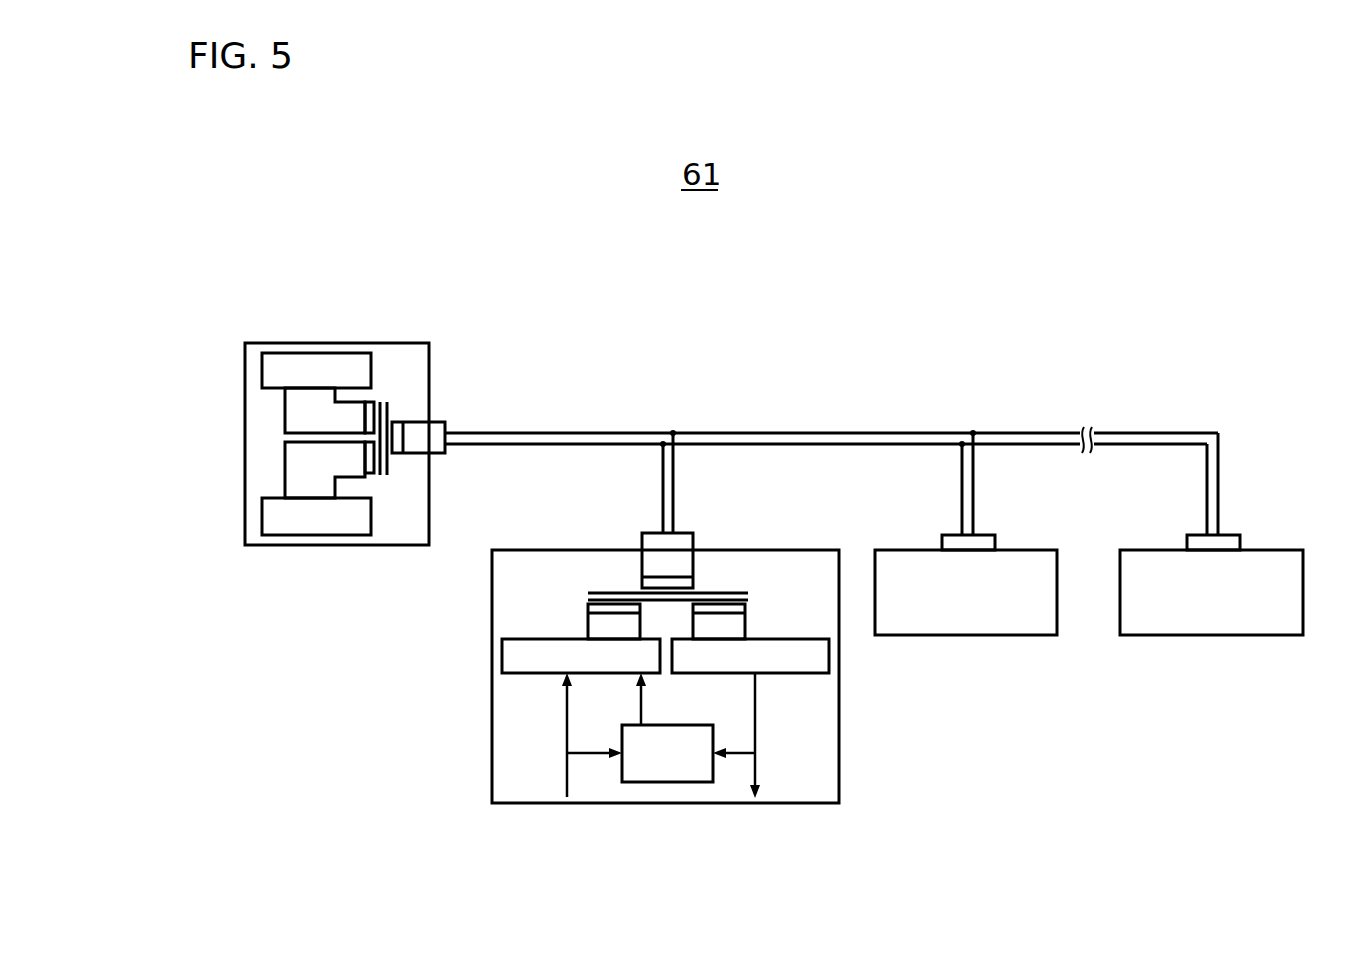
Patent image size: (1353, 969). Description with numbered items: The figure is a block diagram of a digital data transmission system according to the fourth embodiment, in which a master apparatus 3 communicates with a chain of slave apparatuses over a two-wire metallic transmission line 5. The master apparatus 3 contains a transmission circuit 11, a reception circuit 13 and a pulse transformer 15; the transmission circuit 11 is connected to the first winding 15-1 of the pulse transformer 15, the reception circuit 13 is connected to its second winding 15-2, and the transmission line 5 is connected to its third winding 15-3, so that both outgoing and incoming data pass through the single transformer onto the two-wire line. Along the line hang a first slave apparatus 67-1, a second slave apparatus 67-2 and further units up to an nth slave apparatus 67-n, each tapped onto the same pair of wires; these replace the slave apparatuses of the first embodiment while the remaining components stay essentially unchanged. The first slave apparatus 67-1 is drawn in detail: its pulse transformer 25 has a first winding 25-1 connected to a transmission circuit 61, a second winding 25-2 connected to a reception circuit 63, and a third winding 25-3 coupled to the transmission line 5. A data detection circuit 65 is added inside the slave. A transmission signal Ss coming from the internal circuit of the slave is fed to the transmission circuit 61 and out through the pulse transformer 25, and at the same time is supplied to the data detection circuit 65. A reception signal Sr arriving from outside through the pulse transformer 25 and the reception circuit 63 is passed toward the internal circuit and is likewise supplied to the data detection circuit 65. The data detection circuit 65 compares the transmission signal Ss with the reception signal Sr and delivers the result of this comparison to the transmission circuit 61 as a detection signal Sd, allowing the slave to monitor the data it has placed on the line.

The master apparatus 3 is at (305, 336).
The 2-wire metallic transmission line 5 is at (812, 458).
The transmission circuit 11 is at (262, 366).
The reception circuit 13 is at (262, 516).
The pulse transformer 15 is at (400, 468).
The first winding 15-1 is at (376, 400).
The second winding 15-2 is at (372, 477).
The third winding 15-3 is at (398, 422).
The pulse transformer 25 is at (716, 578).
The first winding 25-1 is at (588, 625).
The second winding 25-2 is at (747, 622).
The third winding 25-3 is at (642, 580).
The transmission circuit 61 is at (502, 653).
The reception circuit 63 is at (829, 655).
The data detection circuit 65 is at (663, 784).
The first slave apparatus 67-1 is at (527, 812).
The second slave apparatus 67-2 is at (1015, 648).
The nth slave apparatus 67-n is at (1237, 648).
The transmission signal Ss is at (565, 718).
The detection signal Sd is at (643, 702).
The reception signal Sr is at (757, 709).